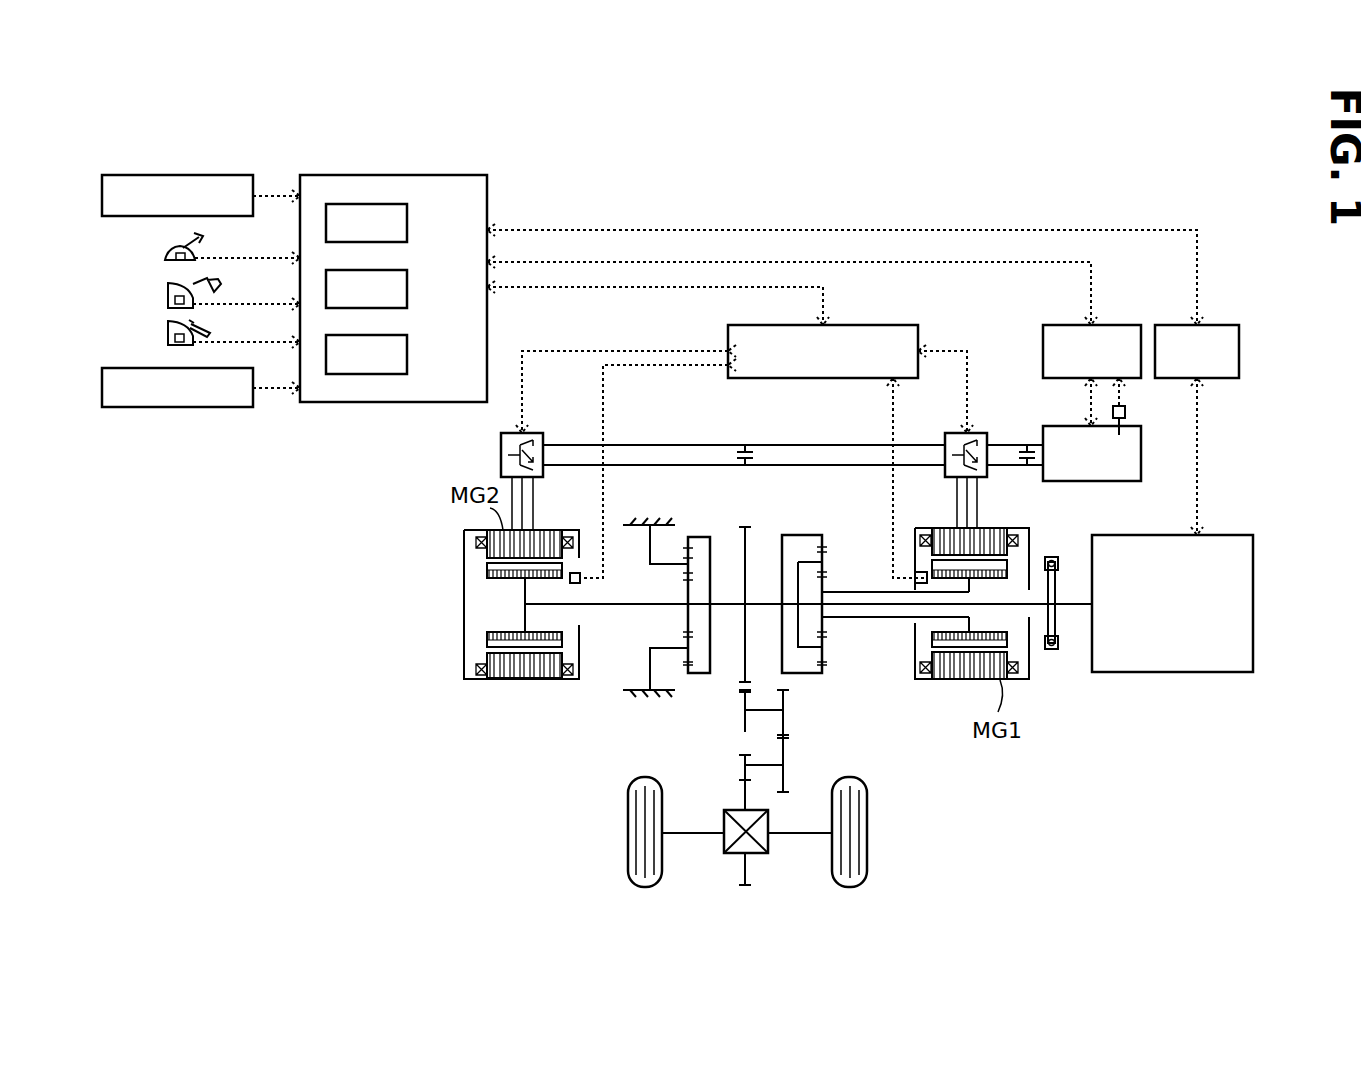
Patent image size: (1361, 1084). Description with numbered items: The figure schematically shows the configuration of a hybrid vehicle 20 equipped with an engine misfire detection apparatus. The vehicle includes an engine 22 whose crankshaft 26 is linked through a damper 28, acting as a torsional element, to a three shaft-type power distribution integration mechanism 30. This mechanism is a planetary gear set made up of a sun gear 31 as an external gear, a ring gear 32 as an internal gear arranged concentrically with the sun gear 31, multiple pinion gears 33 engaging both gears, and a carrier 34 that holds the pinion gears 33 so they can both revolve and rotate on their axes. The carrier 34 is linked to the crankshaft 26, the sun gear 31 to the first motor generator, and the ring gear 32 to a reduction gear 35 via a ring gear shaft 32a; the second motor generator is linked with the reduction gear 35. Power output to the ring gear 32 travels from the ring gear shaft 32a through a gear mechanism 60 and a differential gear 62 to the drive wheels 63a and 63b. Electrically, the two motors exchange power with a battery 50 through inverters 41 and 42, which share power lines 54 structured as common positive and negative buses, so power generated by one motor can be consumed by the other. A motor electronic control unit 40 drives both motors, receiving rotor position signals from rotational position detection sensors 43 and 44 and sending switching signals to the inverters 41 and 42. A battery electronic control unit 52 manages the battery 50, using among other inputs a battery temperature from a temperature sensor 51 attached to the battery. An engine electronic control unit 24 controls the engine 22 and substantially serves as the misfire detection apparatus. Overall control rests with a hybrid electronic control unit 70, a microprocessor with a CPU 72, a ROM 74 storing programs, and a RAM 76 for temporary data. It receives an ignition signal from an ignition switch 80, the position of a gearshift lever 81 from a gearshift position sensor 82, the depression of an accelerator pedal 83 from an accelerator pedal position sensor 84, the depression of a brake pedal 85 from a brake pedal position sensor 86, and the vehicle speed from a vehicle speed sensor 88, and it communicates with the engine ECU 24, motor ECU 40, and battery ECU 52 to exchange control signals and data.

The hybrid vehicle 20 is at (1007, 204).
The engine 22 is at (1253, 600).
The engine electronic control unit 24 is at (1215, 325).
The crankshaft 26 is at (1068, 606).
The damper 28 is at (1053, 650).
The power distribution integration mechanism 30 is at (874, 587).
The sun gear 31 is at (822, 617).
The ring gear 32 is at (822, 665).
The ring gear shaft 32a is at (725, 600).
The pinion gears 33 is at (822, 647).
The carrier 34 is at (797, 565).
The reduction gear 35 is at (701, 514).
The motor electronic control unit 40 is at (865, 325).
The inverter 41 is at (985, 433).
The inverter 42 is at (533, 432).
The rotational position detection sensor 43 is at (913, 572).
The rotational position detection sensor 44 is at (574, 573).
The battery 50 is at (1091, 481).
The temperature sensor 51 is at (1125, 411).
The battery electronic control unit 52 is at (1043, 323).
The power lines 54 is at (812, 446).
The gear mechanism 60 is at (836, 754).
The differential gear 62 is at (768, 845).
The drive wheel 63a is at (628, 865).
The drive wheel 63b is at (867, 866).
The hybrid electronic control unit 70 is at (395, 175).
The CPU 72 is at (407, 223).
The ROM 74 is at (407, 289).
The RAM 76 is at (407, 355).
The ignition switch 80 is at (102, 195).
The gearshift lever 81 is at (196, 238).
The gearshift position sensor 82 is at (166, 254).
The accelerator pedal 83 is at (192, 284).
The accelerator pedal position sensor 84 is at (169, 302).
The brake pedal 85 is at (191, 323).
The brake pedal position sensor 86 is at (169, 342).
The vehicle speed sensor 88 is at (102, 388).